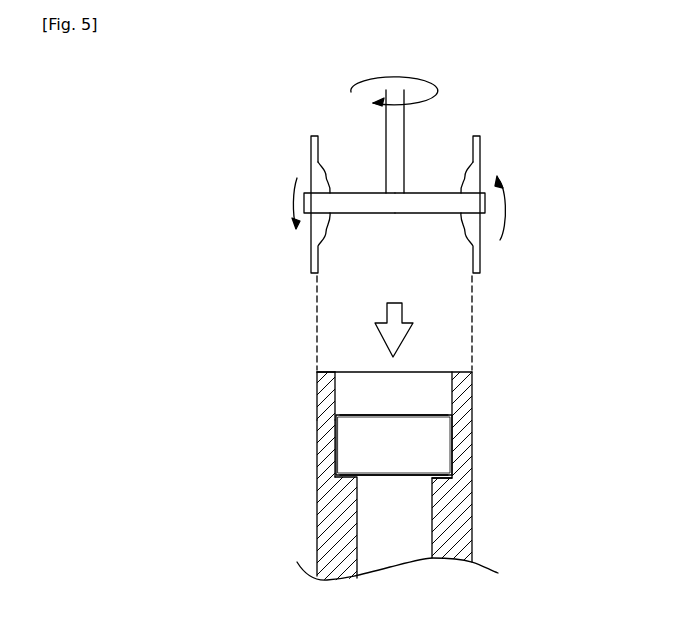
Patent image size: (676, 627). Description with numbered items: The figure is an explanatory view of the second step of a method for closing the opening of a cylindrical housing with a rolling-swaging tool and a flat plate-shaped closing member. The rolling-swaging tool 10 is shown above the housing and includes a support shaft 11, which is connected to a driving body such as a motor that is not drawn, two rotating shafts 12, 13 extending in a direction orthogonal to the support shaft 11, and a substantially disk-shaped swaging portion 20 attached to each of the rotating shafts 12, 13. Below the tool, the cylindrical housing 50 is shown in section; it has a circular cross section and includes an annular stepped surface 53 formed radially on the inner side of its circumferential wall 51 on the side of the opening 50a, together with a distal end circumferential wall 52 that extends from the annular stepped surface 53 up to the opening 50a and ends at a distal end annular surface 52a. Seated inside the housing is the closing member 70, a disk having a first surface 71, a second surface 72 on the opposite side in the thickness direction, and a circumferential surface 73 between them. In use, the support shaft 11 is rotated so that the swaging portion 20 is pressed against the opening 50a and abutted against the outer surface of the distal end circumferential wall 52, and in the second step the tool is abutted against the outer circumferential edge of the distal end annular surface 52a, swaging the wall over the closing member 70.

The rolling-swaging tool 10 is at (461, 108).
The support shaft 11 is at (397, 162).
The rotating shaft 12 is at (362, 207).
The rotating shaft 13 is at (438, 207).
The swaging portion 20 is at (311, 261).
The cylindrical housing 50 is at (479, 529).
The opening 50a is at (432, 372).
The circumferential wall 51 is at (317, 522).
The distal end circumferential wall 52 is at (317, 390).
The distal end annular surface 52a is at (330, 371).
The annular stepped surface 53 is at (447, 475).
The closing member 70 is at (433, 430).
The first surface 71 is at (378, 479).
The second surface 72 is at (387, 412).
The circumferential surface 73 is at (333, 440).